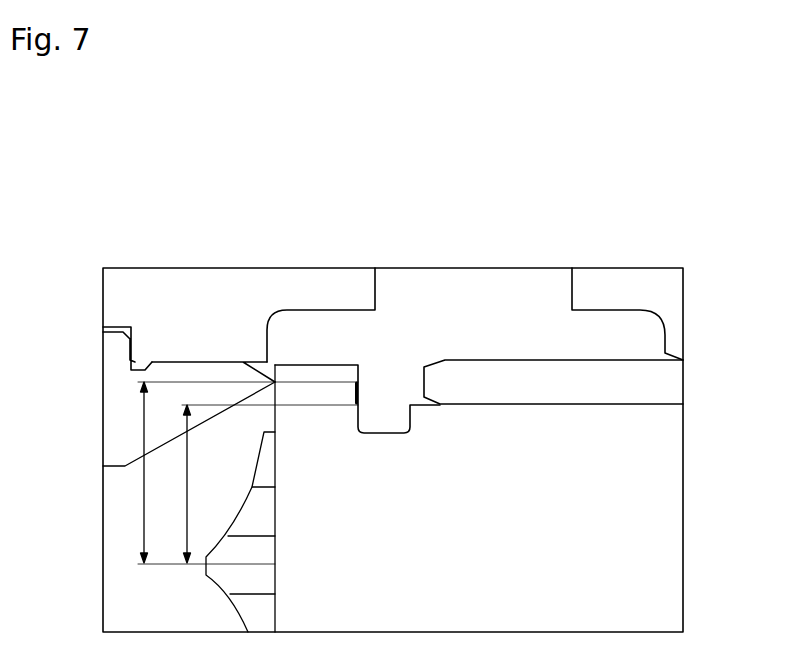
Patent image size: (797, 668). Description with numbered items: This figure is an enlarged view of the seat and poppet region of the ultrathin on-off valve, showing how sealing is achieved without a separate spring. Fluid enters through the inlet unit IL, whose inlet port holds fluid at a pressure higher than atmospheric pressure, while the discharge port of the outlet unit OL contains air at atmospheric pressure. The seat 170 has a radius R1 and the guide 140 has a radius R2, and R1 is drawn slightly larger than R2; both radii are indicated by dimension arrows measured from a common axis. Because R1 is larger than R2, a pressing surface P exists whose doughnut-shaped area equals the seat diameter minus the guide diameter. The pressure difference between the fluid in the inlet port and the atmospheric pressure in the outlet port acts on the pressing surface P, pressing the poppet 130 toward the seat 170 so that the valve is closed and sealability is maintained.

The impeller 130 is at (295, 373).
The guide 140 is at (655, 383).
The seat 170 is at (208, 372).
The pressing surface P is at (357, 386).
The inlet unit IL is at (618, 278).
The outlet unit OL is at (112, 353).
The radius of the seat R1 is at (133, 472).
The radius of the guide R2 is at (175, 484).